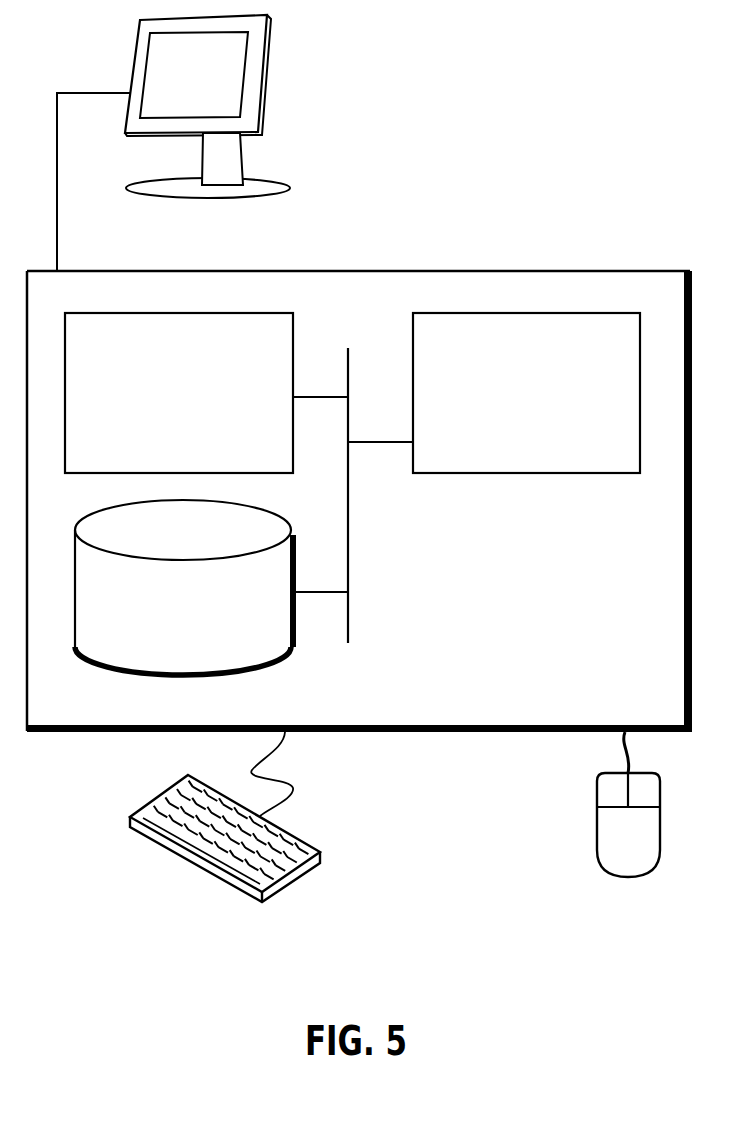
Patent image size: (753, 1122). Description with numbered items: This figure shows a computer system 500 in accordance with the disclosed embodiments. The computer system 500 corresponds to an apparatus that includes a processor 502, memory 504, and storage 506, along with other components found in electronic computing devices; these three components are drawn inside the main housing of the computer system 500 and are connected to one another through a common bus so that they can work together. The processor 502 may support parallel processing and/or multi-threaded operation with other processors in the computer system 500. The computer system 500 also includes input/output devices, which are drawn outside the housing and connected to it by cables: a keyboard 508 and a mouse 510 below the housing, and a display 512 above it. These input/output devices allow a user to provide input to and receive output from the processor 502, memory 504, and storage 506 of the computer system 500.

The computer system 500 is at (403, 250).
The processor 502 is at (552, 404).
The memory 504 is at (202, 404).
The storage 506 is at (208, 617).
The keyboard 508 is at (147, 836).
The mouse 510 is at (648, 847).
The display 512 is at (173, 143).